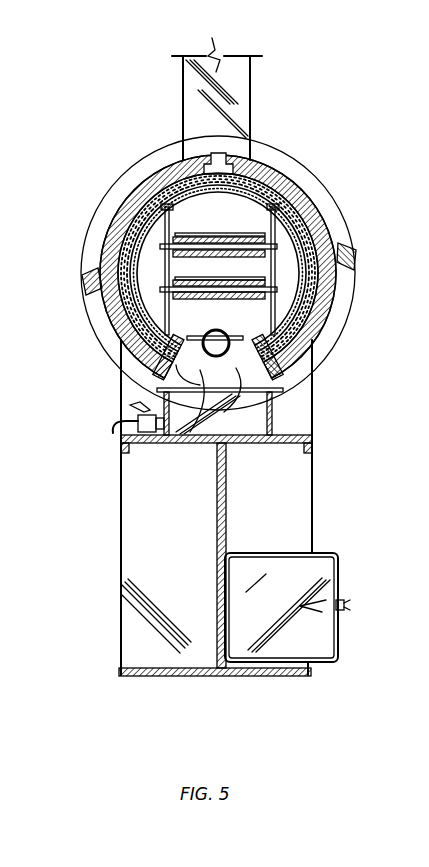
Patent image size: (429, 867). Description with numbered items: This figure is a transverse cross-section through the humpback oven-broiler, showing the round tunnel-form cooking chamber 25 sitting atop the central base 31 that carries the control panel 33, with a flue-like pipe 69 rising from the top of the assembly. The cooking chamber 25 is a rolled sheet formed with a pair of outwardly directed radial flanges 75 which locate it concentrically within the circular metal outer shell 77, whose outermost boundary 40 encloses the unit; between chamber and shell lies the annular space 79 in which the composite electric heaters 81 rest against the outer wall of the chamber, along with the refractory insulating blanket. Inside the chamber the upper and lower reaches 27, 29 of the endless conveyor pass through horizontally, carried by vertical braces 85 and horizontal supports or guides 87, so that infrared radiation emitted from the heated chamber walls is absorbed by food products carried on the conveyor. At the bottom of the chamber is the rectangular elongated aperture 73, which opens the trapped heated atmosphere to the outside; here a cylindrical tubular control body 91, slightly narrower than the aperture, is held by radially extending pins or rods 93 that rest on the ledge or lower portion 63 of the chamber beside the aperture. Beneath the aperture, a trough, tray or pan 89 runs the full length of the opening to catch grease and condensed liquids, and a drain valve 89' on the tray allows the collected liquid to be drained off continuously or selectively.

The flue pipe 69 is at (252, 78).
The outer shell 40 is at (274, 146).
The tunnel-form cooking chamber 25 is at (262, 163).
The upper reach of conveyor 27 is at (130, 192).
The metal outer shell 77 is at (273, 182).
The annular space 79 is at (275, 200).
The composite electric heaters 81 is at (272, 212).
The vertical braces 85 is at (282, 228).
The horizontal supports or guides 87 is at (348, 250).
The cylindrical tubular control body 91 is at (100, 285).
The ledge or lower portion of oven chamber 63 is at (165, 357).
The lower reach of conveyor 29 is at (103, 255).
The radially extending pins or rods 93 is at (103, 307).
The outwardly directed radial flanges 75 is at (272, 416).
The rectangular elongated aperture 73 is at (165, 443).
The trough, tray or pan 89 is at (250, 435).
The drain valve 89' is at (90, 416).
The central base 31 is at (312, 537).
The control panel 33 is at (340, 567).